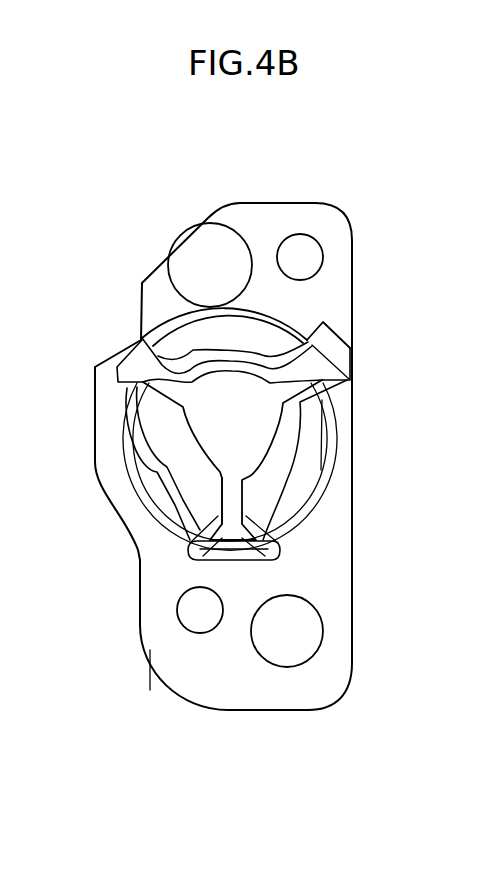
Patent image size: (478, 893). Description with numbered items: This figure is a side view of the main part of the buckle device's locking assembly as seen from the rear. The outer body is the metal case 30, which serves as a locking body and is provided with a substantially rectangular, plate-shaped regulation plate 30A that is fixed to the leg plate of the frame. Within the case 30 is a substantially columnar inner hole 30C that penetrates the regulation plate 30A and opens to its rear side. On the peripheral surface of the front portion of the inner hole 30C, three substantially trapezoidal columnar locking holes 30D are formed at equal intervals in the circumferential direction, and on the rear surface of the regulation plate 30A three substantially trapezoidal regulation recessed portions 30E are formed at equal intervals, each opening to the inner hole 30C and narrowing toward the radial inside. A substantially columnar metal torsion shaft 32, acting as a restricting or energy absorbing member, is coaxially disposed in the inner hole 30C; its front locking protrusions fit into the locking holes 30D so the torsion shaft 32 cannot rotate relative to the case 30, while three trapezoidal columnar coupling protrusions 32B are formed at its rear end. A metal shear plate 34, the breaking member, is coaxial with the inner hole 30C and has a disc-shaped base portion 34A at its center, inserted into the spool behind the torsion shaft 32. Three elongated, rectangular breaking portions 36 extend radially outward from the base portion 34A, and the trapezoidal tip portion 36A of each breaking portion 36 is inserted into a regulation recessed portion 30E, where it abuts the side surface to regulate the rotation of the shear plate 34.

The case 30 is at (185, 240).
The regulation plate 30A is at (140, 660).
The inner hole 30C is at (320, 460).
The locking hole 30D is at (175, 297).
The regulation recessed portion 30E is at (116, 372).
The torsion shaft 32 is at (125, 440).
The coupling protrusion 32B is at (143, 330).
The shear plate 34 is at (225, 363).
The base portion 34A is at (135, 465).
The breaking portion 36 is at (112, 412).
The tip portion 36A is at (120, 367).